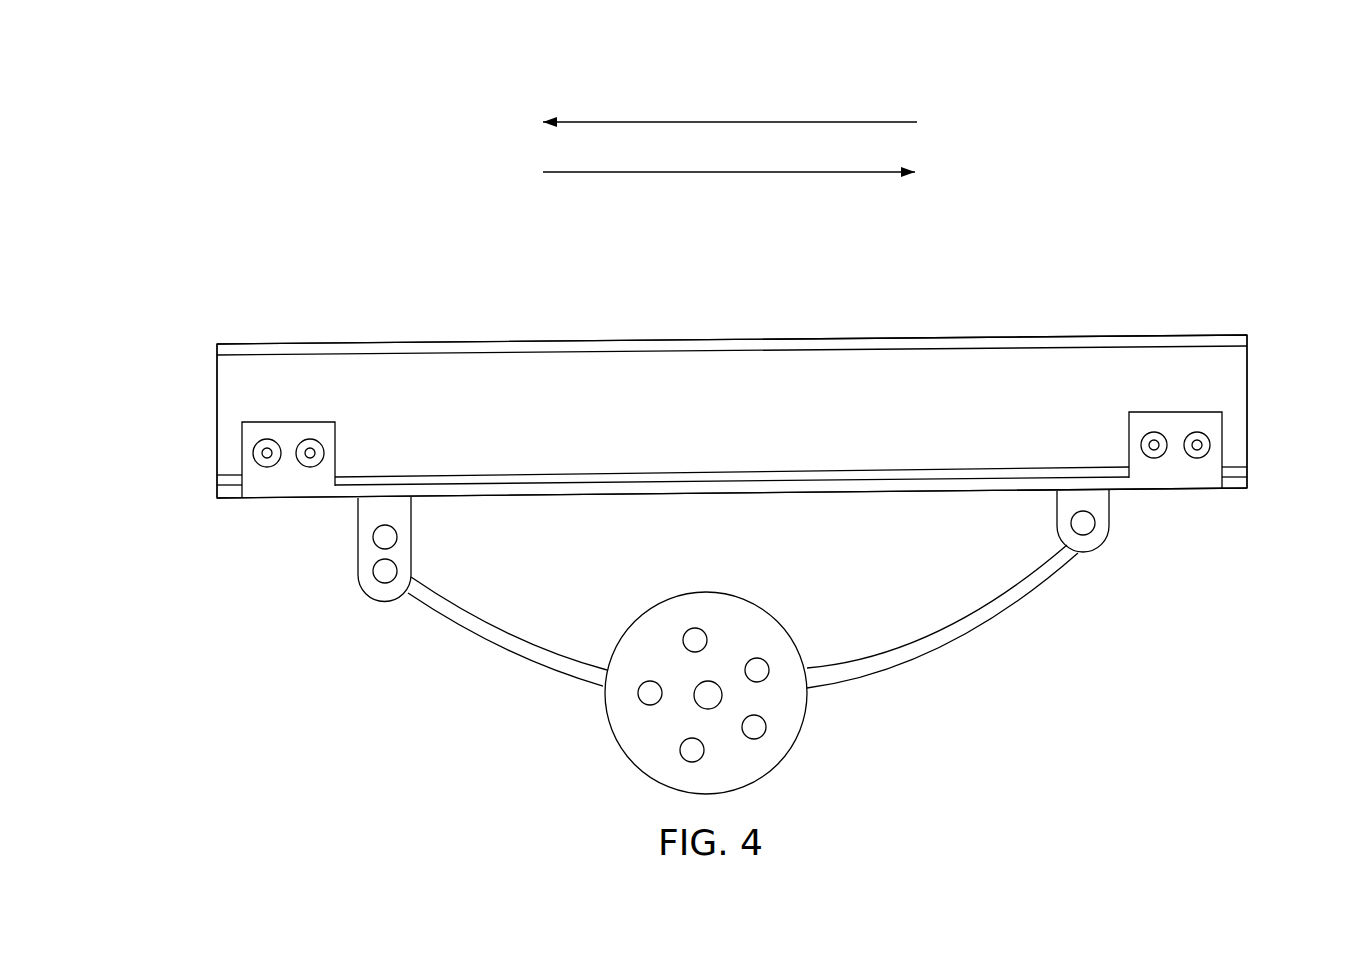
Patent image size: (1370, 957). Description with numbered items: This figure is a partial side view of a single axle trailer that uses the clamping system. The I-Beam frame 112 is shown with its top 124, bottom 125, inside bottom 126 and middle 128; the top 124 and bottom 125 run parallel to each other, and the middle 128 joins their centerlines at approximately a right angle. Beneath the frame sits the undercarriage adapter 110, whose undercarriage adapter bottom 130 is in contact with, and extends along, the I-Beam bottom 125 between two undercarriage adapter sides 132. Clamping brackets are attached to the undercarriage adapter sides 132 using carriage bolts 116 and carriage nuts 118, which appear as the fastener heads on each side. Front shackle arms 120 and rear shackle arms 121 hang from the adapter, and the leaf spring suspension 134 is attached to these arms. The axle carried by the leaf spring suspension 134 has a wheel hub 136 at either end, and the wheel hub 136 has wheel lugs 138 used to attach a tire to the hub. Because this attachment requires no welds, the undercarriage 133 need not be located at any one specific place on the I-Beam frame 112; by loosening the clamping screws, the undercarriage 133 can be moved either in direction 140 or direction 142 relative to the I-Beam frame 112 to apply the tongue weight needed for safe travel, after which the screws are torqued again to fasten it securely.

The undercarriage adapter 110 is at (1186, 490).
The I-Beam frame 112 is at (1247, 388).
The carriage bolts 116 is at (262, 455).
The carriage nuts 118 is at (256, 447).
The front shackle arms 120 is at (1102, 552).
The rear shackle arms 121 is at (357, 578).
The top 124 is at (1108, 336).
The bottom 125 is at (900, 481).
The inside bottom 126 is at (790, 470).
The middle 128 is at (953, 368).
The undercarriage adapter bottom 130 is at (1237, 489).
The undercarriage adapter sides 132 is at (288, 480).
The undercarriage 133 is at (217, 497).
The leaf spring suspension 134 is at (942, 643).
The wheel hub 136 is at (792, 755).
The wheel lugs 138 is at (680, 748).
The direction 140 is at (677, 121).
The direction 142 is at (645, 173).